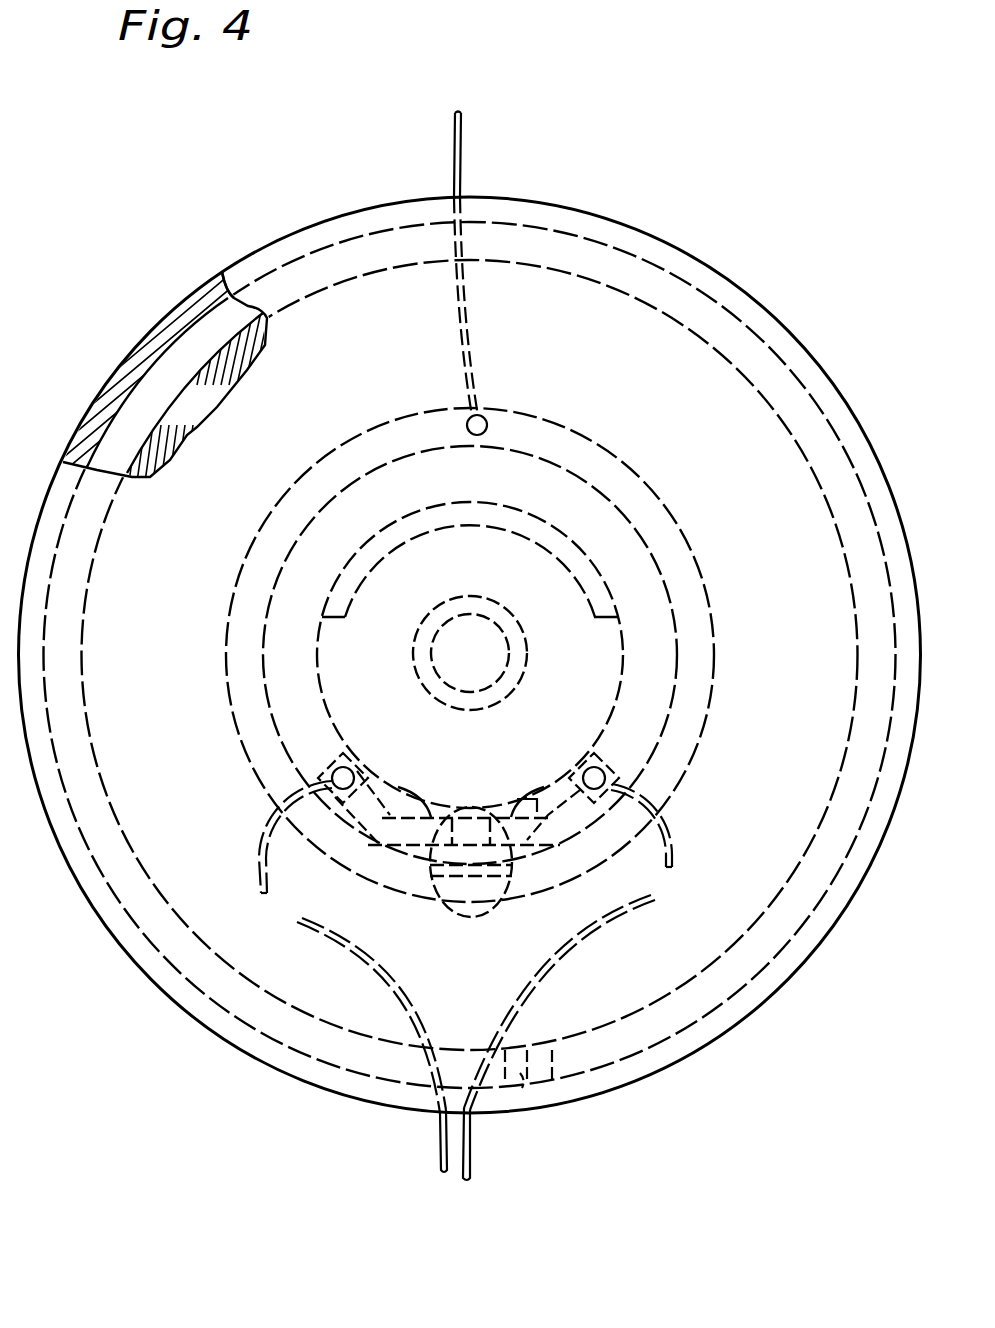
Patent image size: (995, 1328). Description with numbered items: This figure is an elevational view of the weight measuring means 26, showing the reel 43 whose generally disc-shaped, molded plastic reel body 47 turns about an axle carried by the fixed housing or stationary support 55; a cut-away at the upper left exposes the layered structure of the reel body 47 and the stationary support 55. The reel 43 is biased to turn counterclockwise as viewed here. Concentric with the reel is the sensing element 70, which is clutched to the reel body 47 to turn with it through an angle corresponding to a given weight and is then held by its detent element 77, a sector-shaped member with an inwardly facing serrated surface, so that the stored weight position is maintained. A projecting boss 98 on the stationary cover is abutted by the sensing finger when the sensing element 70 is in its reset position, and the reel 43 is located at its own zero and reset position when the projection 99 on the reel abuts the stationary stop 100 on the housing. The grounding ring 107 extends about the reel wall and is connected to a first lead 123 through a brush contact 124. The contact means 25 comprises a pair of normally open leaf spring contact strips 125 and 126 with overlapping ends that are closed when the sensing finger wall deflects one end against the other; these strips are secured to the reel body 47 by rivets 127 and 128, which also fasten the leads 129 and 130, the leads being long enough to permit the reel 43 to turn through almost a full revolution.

The weight measuring means 26 is at (657, 216).
The reel 43 is at (783, 248).
The reel body 47 is at (191, 402).
The stationary support 55 is at (284, 283).
The first lead 123 is at (470, 313).
The brush contact 124 is at (492, 414).
The grounding ring 107 is at (632, 470).
The detent element 77 is at (582, 556).
The sensing element 70 is at (630, 664).
The contact means 25 is at (452, 806).
The projecting boss 98 is at (527, 798).
The rivet 127 is at (352, 767).
The rivet 128 is at (601, 770).
The leaf spring contact strip 125 is at (380, 797).
The leaf spring contact strip 126 is at (560, 788).
The lead 130 is at (262, 842).
The lead 129 is at (675, 855).
The stationary stop 100 is at (550, 1045).
The projection 99 is at (520, 1075).